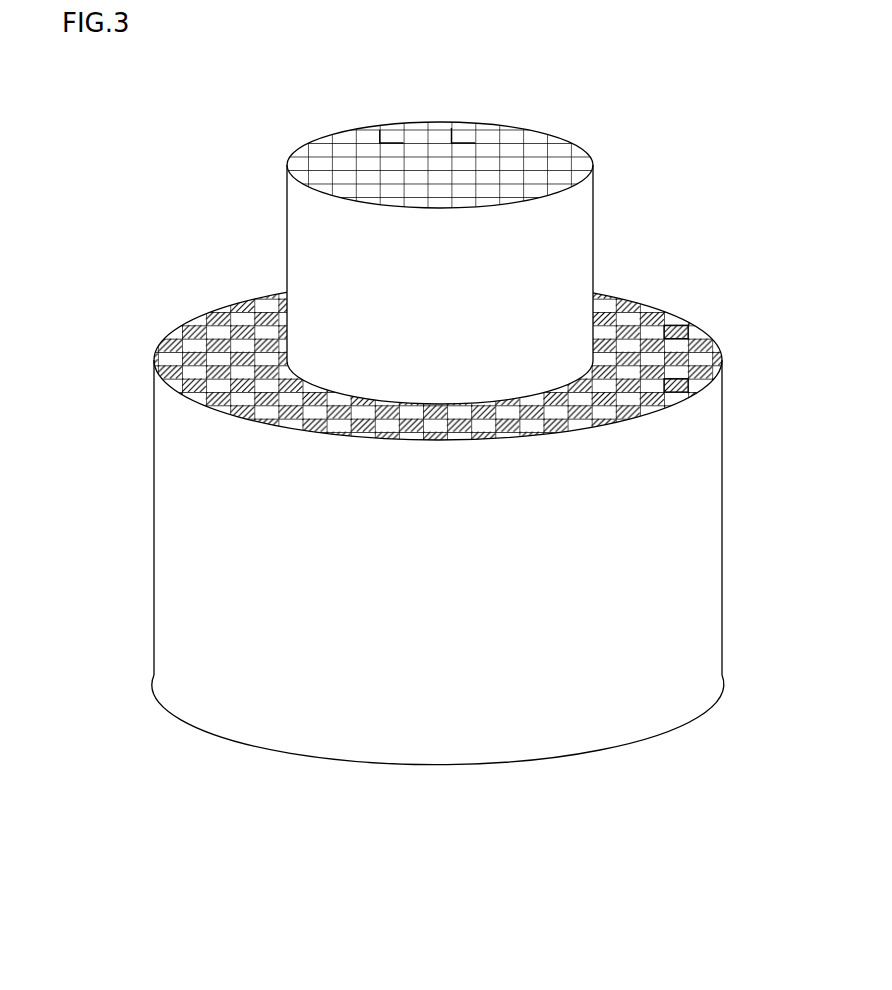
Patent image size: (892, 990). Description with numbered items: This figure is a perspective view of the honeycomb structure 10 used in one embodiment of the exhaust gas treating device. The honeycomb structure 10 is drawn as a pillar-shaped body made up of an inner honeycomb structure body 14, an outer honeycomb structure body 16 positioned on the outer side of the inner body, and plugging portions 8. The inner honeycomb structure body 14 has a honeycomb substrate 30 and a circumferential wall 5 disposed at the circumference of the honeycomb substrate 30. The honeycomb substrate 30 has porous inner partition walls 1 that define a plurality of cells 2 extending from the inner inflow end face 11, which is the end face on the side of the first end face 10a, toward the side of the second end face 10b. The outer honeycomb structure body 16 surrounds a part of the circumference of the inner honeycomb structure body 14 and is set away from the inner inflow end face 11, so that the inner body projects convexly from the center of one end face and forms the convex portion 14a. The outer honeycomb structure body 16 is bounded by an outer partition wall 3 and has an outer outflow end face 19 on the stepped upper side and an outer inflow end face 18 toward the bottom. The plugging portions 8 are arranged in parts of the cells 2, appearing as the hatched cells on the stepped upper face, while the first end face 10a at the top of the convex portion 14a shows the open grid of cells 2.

The honeycomb structure 10 is at (755, 172).
The first end face 10a is at (502, 126).
The second end face 10b is at (340, 752).
The inner partition wall 1 is at (387, 135).
The cell 2 is at (345, 148).
The outer partition wall 3 is at (683, 385).
The circumferential wall 5 is at (580, 222).
The plugging portion 8 is at (675, 330).
The inner inflow end face 11 is at (287, 160).
The inner honeycomb structure body 14 is at (565, 133).
The convex portion 14a is at (598, 249).
The outer honeycomb structure body 16 is at (727, 541).
The outer inflow end face 18 is at (655, 728).
The outer outflow end face 19 is at (175, 330).
The honeycomb substrate 30 is at (463, 122).